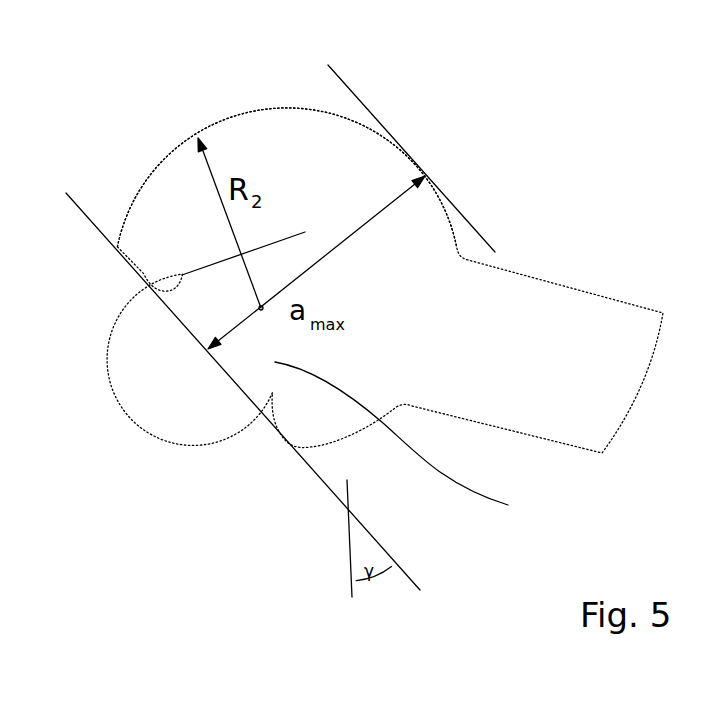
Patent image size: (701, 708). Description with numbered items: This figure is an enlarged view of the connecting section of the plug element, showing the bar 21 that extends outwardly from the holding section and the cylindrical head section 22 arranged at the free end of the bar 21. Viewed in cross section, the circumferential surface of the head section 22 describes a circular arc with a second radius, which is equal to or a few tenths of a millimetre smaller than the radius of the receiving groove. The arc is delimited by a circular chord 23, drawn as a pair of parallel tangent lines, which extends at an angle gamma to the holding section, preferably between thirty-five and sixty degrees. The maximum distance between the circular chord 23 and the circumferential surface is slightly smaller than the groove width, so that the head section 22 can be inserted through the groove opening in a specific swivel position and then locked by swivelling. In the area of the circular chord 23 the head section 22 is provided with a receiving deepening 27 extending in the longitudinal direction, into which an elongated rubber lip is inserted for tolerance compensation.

The bar 21 is at (585, 315).
The head section 22 is at (236, 142).
The circular chord 23 is at (235, 386).
The receiving deepening 27 is at (410, 451).